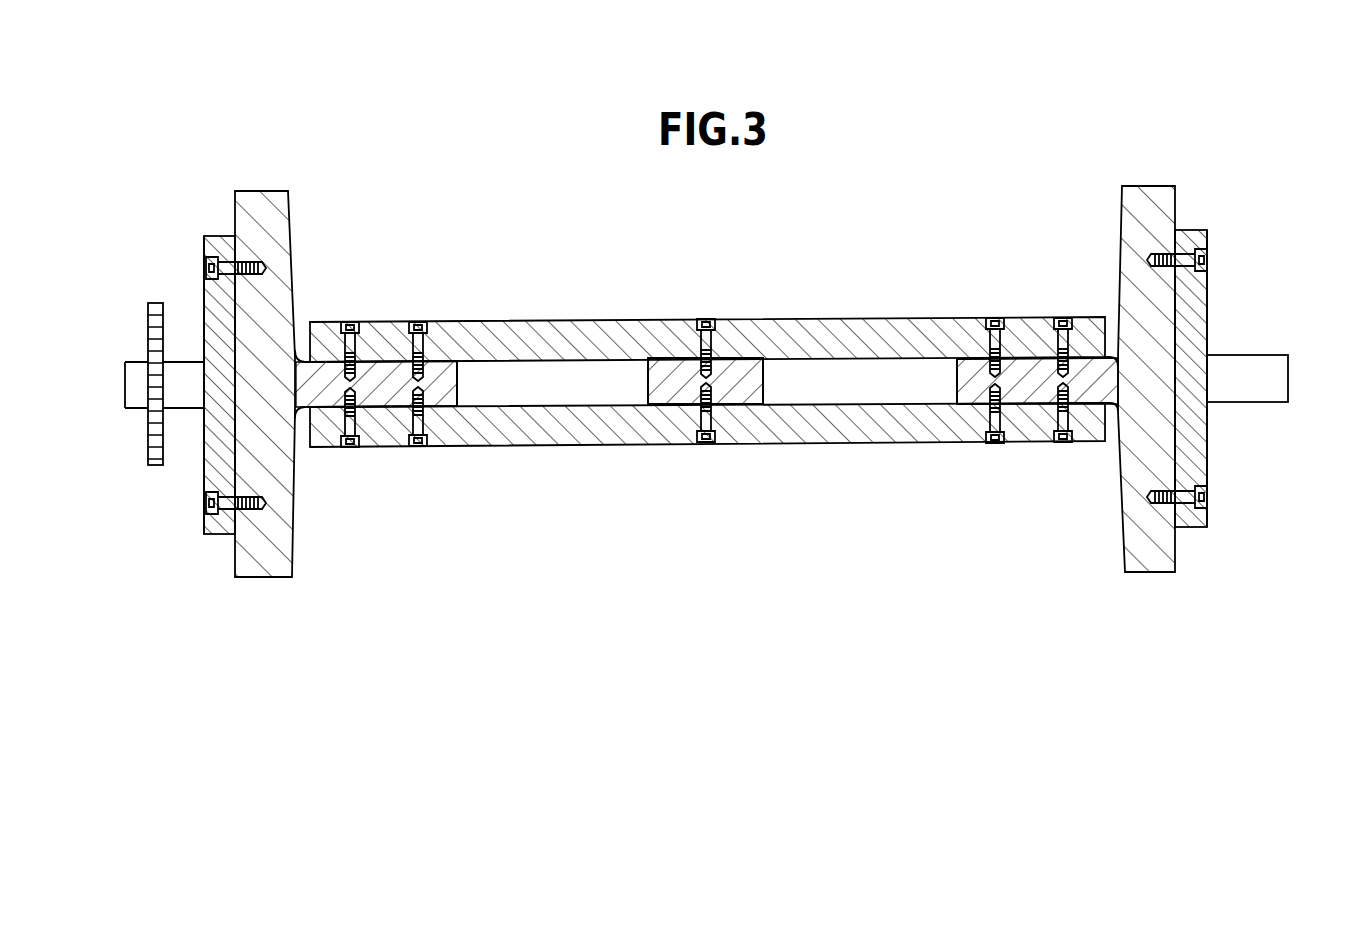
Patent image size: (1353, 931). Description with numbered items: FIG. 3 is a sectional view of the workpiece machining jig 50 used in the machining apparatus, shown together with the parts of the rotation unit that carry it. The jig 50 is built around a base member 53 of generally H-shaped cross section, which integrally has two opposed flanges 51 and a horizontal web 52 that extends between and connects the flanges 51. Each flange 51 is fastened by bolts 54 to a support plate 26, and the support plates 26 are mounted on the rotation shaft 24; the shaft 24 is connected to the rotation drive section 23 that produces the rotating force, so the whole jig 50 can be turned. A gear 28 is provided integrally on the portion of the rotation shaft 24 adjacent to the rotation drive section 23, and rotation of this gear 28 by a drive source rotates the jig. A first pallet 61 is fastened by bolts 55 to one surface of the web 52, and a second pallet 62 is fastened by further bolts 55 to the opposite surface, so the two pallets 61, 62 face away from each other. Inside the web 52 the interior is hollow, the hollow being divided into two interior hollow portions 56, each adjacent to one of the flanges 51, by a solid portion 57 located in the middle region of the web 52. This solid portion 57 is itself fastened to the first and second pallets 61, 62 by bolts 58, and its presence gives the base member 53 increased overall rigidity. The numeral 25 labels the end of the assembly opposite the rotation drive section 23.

The rotation drive section 23 is at (202, 458).
The rotation shaft 24 is at (133, 362).
The second end portion 25 is at (1213, 440).
The support plates 26 is at (222, 538).
The gear 28 is at (150, 438).
The workpiece machining jig 50 is at (252, 137).
The flanges 51 is at (291, 214).
The horizontal web 52 is at (453, 364).
The base member 53 is at (252, 190).
The bolts 54 is at (205, 268).
The bolts 55 is at (418, 320).
The interior hollow portions 56 is at (707, 382).
The solid portion 57 is at (654, 382).
The bolts 58 is at (706, 318).
The first pallet 61 is at (782, 320).
The second pallet 62 is at (810, 445).